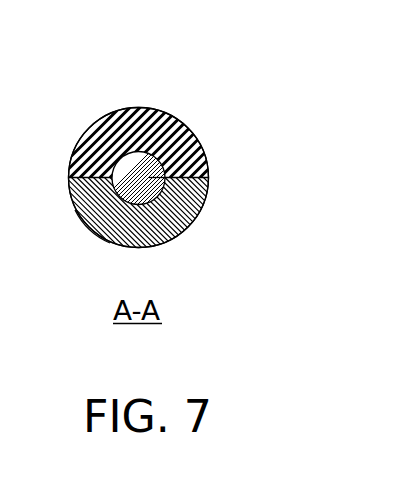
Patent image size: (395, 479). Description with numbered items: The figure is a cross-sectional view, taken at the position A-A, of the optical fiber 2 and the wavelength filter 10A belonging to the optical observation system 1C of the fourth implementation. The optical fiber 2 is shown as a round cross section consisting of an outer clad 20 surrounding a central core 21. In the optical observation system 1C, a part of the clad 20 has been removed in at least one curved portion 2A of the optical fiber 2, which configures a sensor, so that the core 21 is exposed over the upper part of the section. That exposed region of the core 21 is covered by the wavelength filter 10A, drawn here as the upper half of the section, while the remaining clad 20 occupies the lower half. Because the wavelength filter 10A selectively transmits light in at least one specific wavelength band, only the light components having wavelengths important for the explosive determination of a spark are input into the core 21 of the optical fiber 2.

The optical observation system 1C is at (232, 83).
The wavelength filter 10A is at (203, 150).
The optical fiber 2 is at (266, 195).
The clad 20 is at (192, 222).
The core 21 is at (182, 207).
The curved portion 2A is at (93, 230).